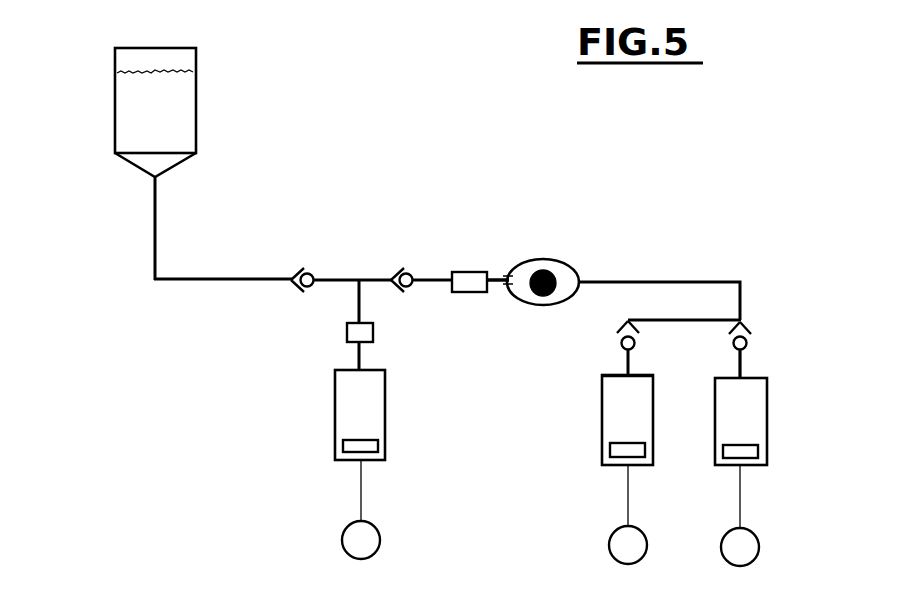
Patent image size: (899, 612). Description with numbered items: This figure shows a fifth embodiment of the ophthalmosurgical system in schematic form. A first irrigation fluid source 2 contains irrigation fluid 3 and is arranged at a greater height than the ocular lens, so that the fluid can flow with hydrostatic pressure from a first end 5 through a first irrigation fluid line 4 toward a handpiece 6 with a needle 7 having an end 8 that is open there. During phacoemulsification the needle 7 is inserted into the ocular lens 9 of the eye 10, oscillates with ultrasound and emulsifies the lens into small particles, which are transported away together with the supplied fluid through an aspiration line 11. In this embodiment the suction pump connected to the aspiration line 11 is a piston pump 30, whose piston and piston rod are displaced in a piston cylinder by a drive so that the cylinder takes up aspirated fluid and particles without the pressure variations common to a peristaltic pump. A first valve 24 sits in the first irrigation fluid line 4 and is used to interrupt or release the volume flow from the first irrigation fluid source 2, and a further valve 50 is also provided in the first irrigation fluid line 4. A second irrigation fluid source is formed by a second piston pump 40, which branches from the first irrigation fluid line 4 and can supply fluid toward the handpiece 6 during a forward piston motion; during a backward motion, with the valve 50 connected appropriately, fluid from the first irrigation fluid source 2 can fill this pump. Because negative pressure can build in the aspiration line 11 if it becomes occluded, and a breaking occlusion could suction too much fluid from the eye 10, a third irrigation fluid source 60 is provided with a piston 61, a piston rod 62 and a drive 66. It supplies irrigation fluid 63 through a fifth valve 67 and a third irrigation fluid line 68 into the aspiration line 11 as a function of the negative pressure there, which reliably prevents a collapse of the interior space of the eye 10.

The first irrigation fluid source 2 is at (115, 100).
The irrigation fluid 3 is at (118, 140).
The first irrigation fluid line 4 is at (188, 283).
The first end 5 is at (148, 178).
The handpiece 6 is at (456, 270).
The needle 7 is at (494, 275).
The open end 8 is at (510, 278).
The ocular lens 9 is at (546, 268).
The eye 10 is at (572, 262).
The aspiration line 11 is at (652, 281).
The first valve 24 is at (292, 272).
The piston pump 30 is at (768, 415).
The second piston pump 40 is at (335, 413).
The valve 50 is at (390, 272).
The third irrigation fluid source 60 is at (603, 420).
The piston 61 is at (612, 452).
The piston rod 62 is at (626, 500).
The irrigation fluid 63 is at (612, 388).
The drive 66 is at (608, 545).
The fifth valve 67 is at (620, 342).
The third irrigation fluid line 68 is at (625, 320).